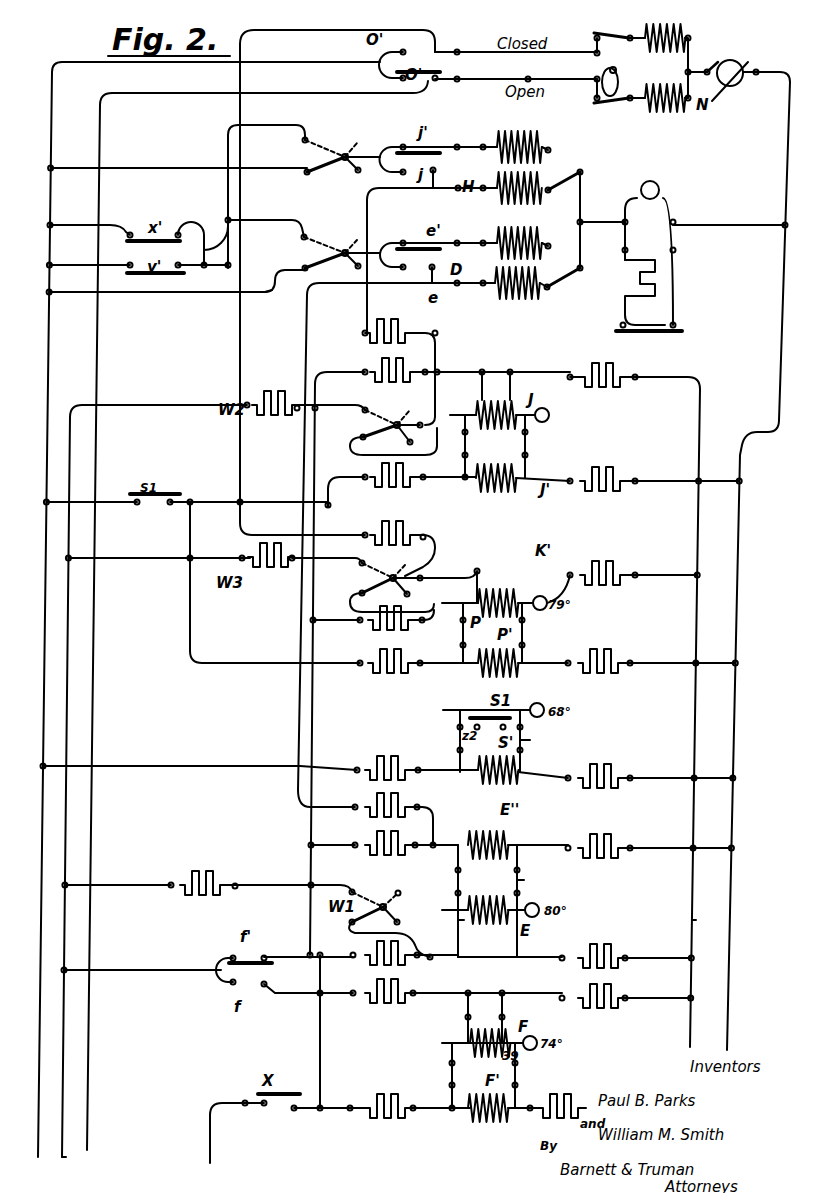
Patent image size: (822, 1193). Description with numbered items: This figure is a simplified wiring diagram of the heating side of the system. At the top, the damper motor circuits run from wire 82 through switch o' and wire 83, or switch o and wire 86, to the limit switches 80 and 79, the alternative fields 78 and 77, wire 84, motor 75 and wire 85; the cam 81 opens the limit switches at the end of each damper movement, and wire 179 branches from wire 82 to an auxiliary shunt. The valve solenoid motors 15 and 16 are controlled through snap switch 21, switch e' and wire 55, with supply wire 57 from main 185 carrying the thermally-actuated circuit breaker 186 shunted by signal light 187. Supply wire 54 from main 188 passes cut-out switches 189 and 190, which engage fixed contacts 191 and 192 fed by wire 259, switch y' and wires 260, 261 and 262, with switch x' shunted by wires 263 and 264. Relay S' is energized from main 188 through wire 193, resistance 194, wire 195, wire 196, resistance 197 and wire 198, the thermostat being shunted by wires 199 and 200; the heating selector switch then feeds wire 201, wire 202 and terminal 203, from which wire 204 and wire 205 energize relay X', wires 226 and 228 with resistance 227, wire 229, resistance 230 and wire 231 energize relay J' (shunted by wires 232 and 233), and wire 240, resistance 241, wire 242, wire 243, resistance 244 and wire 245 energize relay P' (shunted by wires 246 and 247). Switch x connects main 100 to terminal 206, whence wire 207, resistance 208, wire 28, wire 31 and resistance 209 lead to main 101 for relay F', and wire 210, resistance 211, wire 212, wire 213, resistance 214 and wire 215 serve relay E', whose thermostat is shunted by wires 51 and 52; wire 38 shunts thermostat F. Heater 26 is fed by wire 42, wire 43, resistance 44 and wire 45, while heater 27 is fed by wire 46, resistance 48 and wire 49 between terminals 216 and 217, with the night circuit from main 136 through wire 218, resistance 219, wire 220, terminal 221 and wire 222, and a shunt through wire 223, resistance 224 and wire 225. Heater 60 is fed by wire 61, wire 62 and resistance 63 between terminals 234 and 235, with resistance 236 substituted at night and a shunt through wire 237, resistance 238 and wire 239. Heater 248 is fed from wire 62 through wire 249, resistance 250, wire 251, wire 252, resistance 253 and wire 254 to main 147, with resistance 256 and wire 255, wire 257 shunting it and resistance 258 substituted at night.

The wire 82 is at (72, 62).
The main 188 is at (38, 1118).
The wire 179 is at (96, 1106).
The wire 257 is at (255, 31).
The wire 83 is at (488, 52).
The wire 86 is at (488, 76).
The limit switch 80 is at (619, 44).
The cam 81 is at (619, 75).
The limit switch 79 is at (619, 103).
The field 78 is at (668, 62).
The field 77 is at (666, 106).
The wire 84 is at (703, 56).
The motor 75 is at (742, 64).
The wire 85 is at (772, 80).
The main 185 is at (784, 305).
The supply wire 57 is at (748, 226).
The signal light 187 is at (660, 175).
The thermally-actuated circuit breaker 186 is at (668, 316).
The snap switch 21 is at (553, 176).
The solenoid motor 15 is at (536, 138).
The solenoid motor 16 is at (512, 300).
The fixed contact 191 is at (306, 138).
The cut-out switch 189 is at (323, 172).
The fixed contact 192 is at (306, 234).
The cut-out switch 190 is at (310, 256).
The wire 261 is at (228, 135).
The wire 54 is at (177, 235).
The wire 263 is at (118, 226).
The auxiliary electric heater 26 is at (276, 641).
The wire 260 is at (204, 236).
The wire 262 is at (266, 233).
The wire 259 is at (36, 290).
The wire 264 is at (139, 277).
The wire 225 is at (282, 809).
The wire 55 is at (432, 254).
The wire 239 is at (362, 322).
The resistance 238 is at (387, 323).
The wire 237 is at (445, 322).
The resistance 63 is at (362, 378).
The wire 62 is at (300, 858).
The terminal 234 is at (399, 363).
The terminal 235 is at (440, 369).
The auxiliary heating element 60 is at (496, 386).
The wire 61 is at (625, 705).
The resistance 236 is at (190, 774).
The wire 232 is at (429, 432).
The wire 233 is at (507, 439).
The wire 226 is at (377, 485).
The resistance 227 is at (445, 491).
The wire 228 is at (481, 487).
The wire 229 is at (544, 498).
The resistance 230 is at (608, 492).
The wire 231 is at (646, 484).
The wire 201 is at (118, 504).
The wire 202 is at (180, 506).
The terminal 203 is at (194, 506).
The wire 204 is at (302, 289).
The wire 240 is at (202, 664).
The resistance 258 is at (266, 566).
The resistance 256 is at (380, 536).
The wire 255 is at (444, 563).
The wire 251 is at (420, 583).
The wire 246 is at (409, 614).
The wire 249 is at (336, 632).
The resistance 250 is at (378, 630).
The heater 248 is at (494, 599).
The wire 247 is at (510, 633).
The wire 252 is at (574, 595).
The resistance 253 is at (612, 580).
The wire 254 is at (662, 588).
The wire 205 is at (649, 564).
The resistance 241 is at (396, 674).
The wire 242 is at (445, 678).
The wire 243 is at (526, 672).
The resistance 244 is at (604, 676).
The wire 245 is at (664, 668).
The wire 199 is at (458, 738).
The wire 200 is at (548, 737).
The wire 193 is at (155, 771).
The resistance 194 is at (395, 758).
The wire 195 is at (444, 784).
The wire 196 is at (524, 780).
The resistance 197 is at (602, 790).
The wire 198 is at (652, 780).
The resistance 224 is at (360, 806).
The wire 223 is at (439, 825).
The resistance 211 is at (360, 854).
The wire 212 is at (439, 836).
The wire 51 is at (488, 894).
The wire 52 is at (536, 881).
The wire 213 is at (539, 858).
The resistance 214 is at (606, 860).
The wire 215 is at (660, 850).
The heating coil 27 is at (490, 921).
The wire 222 is at (451, 927).
The wire 218 is at (126, 887).
The resistance 219 is at (202, 895).
The wire 220 is at (268, 899).
The terminal 221 is at (350, 888).
The terminal 216 is at (420, 960).
The terminal 217 is at (440, 960).
The wire 46 is at (576, 965).
The resistance 48 is at (374, 958).
The wire 49 is at (308, 958).
The wire 45 is at (150, 971).
The wire 43 is at (286, 996).
The wire 210 is at (320, 1050).
The resistance 44 is at (400, 1004).
The wire 42 is at (614, 1003).
The wire 38 is at (451, 1070).
The main 100 is at (210, 1112).
The terminal 206 is at (320, 1112).
The wire 207 is at (360, 1116).
The resistance 208 is at (386, 1104).
The wire 28 is at (436, 1112).
The wire 31 is at (526, 1116).
The resistance 209 is at (560, 1098).
The main 101 is at (578, 1104).
The main 147 is at (690, 934).
The main 136 is at (56, 1166).